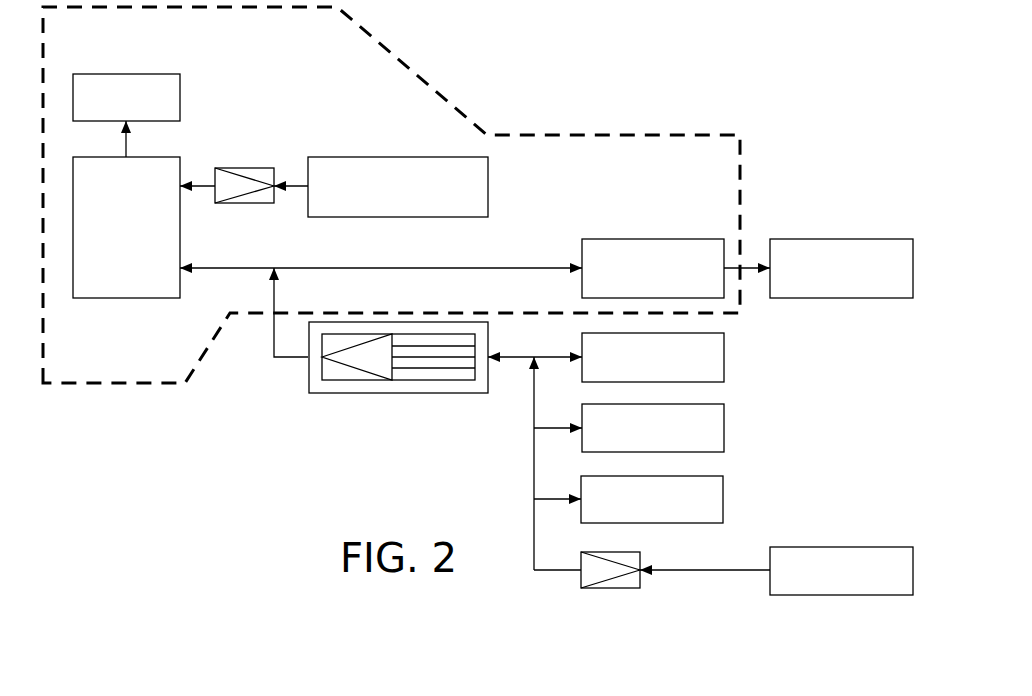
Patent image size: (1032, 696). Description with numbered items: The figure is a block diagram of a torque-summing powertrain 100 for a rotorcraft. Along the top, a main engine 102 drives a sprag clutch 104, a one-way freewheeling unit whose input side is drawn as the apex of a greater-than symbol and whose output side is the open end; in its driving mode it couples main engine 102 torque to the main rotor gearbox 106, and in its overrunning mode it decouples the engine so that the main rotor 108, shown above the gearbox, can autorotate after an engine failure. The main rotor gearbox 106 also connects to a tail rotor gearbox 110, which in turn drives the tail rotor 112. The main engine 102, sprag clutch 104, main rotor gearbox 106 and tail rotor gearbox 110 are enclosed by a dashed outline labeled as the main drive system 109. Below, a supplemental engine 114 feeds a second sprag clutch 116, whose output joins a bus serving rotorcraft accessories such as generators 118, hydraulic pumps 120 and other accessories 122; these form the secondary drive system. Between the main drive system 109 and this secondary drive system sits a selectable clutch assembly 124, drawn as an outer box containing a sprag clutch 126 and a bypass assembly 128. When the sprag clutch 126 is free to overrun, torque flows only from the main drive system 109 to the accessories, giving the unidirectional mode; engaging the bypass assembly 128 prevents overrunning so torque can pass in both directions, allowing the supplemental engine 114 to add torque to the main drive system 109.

The torque-summing powertrain 100 is at (794, 78).
The main engine 102 is at (398, 155).
The sprag clutch 104 is at (245, 167).
The main rotor gearbox 106 is at (115, 300).
The main rotor 108 is at (115, 71).
The main drive system 109 is at (124, 390).
The tail rotor gearbox 110 is at (652, 233).
The tail rotor 112 is at (842, 233).
The supplemental engine 114 is at (842, 597).
The sprag clutch 116 is at (610, 590).
The generators 118 is at (723, 510).
The hydraulic pumps 120 is at (724, 440).
The other accessories 122 is at (724, 370).
The selectable clutch assembly 124 is at (397, 393).
The sprag clutch 126 is at (340, 382).
The bypass assembly 128 is at (440, 382).